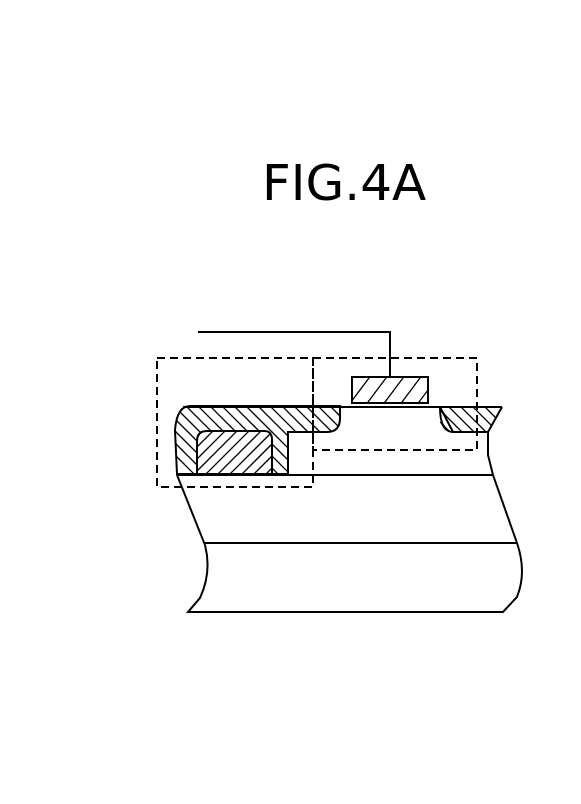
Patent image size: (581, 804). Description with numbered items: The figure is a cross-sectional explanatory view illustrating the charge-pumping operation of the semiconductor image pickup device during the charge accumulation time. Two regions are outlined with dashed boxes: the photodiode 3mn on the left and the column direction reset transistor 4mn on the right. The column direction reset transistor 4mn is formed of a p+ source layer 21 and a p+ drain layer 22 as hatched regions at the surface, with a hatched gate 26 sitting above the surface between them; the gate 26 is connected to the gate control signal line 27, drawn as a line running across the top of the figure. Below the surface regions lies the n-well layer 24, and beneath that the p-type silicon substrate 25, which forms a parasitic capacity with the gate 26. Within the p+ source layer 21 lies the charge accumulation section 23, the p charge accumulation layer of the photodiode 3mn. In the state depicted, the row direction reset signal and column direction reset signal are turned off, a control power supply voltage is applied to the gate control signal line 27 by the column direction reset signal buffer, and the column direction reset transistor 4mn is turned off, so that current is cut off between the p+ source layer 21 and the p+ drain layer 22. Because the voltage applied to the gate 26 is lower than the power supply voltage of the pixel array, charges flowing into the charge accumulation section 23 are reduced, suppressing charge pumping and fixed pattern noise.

The p+ source layer 21 is at (340, 412).
The p+ drain layer 22 is at (467, 407).
The charge accumulation section 23 is at (212, 465).
The n-well layer 24 is at (485, 497).
The p-type silicon substrate 25 is at (360, 592).
The gate 26 is at (408, 393).
The gate control signal line 27 is at (268, 332).
The photodiode 3mn is at (173, 358).
The column direction reset transistor 4mn is at (458, 358).